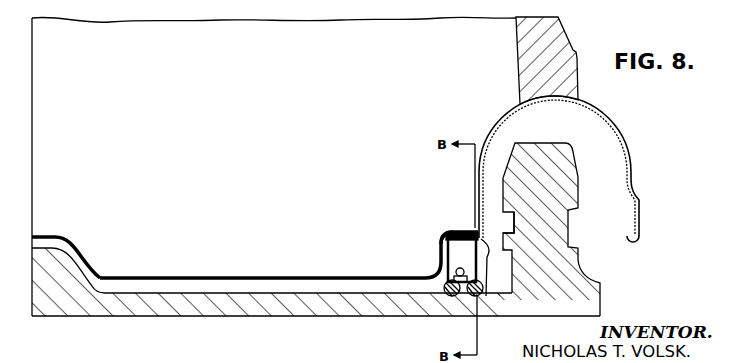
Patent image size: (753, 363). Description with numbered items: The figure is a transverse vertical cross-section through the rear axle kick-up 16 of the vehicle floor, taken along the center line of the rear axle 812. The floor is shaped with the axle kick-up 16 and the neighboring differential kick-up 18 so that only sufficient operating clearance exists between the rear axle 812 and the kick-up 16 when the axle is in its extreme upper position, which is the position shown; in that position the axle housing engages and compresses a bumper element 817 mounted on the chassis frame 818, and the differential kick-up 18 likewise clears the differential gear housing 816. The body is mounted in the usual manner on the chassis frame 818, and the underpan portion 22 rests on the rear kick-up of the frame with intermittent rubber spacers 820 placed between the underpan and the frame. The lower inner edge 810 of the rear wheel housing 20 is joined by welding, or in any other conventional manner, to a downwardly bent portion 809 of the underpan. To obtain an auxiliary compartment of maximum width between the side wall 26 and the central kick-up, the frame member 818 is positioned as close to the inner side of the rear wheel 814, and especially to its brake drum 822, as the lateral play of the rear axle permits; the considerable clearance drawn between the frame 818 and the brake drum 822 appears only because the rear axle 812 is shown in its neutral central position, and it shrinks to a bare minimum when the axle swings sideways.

The rear axle kick-up 16 is at (207, 276).
The differential kick-up 18 is at (60, 238).
The rear wheel housing 20 is at (507, 115).
The underpan portion 22 is at (457, 230).
The side wall 26 is at (440, 251).
The downwardly bent portion of the underpan 809 is at (475, 226).
The lower inner edge of the rear wheel housing 810 is at (495, 267).
The rear wheel axle 812 is at (204, 313).
The rear wheel 814 is at (577, 310).
The differential gear housing 816 is at (42, 313).
The bumper element 817 is at (480, 298).
The chassis frame 818 is at (447, 282).
The rubber spacers 820 is at (442, 234).
The brake drum 822 is at (503, 249).